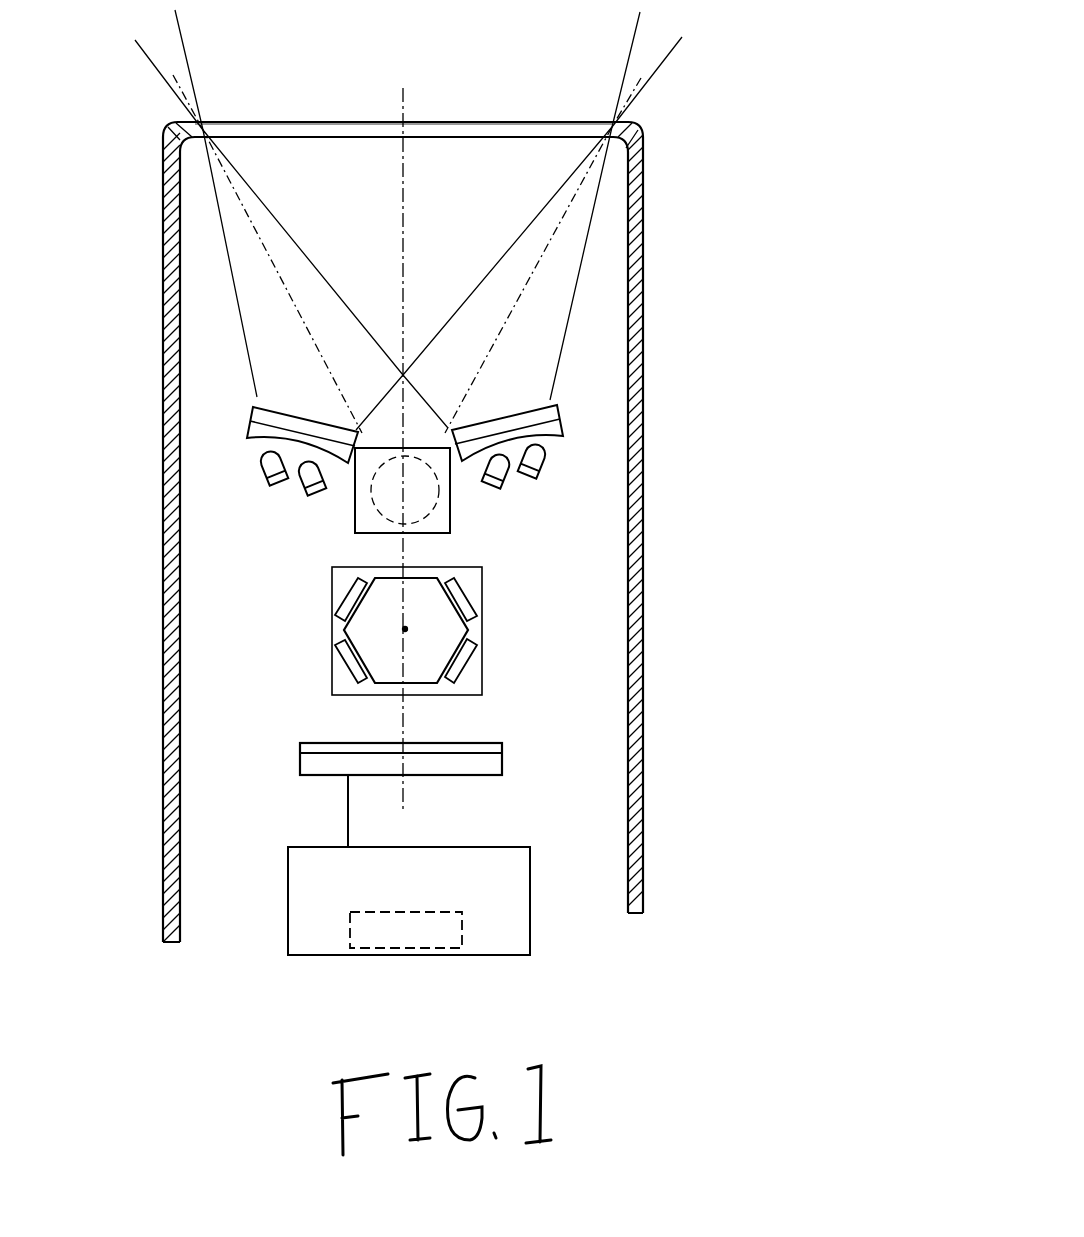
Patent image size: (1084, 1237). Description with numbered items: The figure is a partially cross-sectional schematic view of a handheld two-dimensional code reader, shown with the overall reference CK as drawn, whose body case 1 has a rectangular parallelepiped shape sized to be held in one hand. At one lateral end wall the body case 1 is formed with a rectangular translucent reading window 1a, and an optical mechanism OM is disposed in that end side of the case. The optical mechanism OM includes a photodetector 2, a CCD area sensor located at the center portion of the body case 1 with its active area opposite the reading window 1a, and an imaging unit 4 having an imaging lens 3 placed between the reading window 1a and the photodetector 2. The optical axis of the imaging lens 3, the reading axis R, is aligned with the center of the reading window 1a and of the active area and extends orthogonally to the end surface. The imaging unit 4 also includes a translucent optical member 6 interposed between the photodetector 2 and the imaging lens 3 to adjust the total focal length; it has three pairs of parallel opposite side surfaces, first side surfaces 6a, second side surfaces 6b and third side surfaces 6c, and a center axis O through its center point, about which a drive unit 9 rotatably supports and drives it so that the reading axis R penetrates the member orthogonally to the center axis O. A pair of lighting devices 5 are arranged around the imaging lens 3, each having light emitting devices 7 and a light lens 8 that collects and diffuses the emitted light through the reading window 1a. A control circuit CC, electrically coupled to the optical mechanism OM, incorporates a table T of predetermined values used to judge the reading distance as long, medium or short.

The body case 1 is at (163, 372).
The reading window 1a is at (258, 130).
The photodetector 2 is at (468, 775).
The imaging lens 3 is at (353, 520).
The imaging unit 4 is at (528, 612).
The lighting device 5 is at (240, 456).
The optical member 6 is at (377, 646).
The first side surfaces 6a is at (368, 683).
The second side surfaces 6b is at (430, 578).
The third side surfaces 6c is at (347, 611).
The light emitting device 7 is at (305, 478).
The light lens 8 is at (255, 408).
The drive unit 9 is at (483, 652).
The reading axis R is at (403, 90).
The center axis O is at (418, 624).
The control circuit CC is at (288, 884).
The table T is at (476, 950).
The optical mechanism OM is at (576, 826).
The clock CK is at (767, 111).